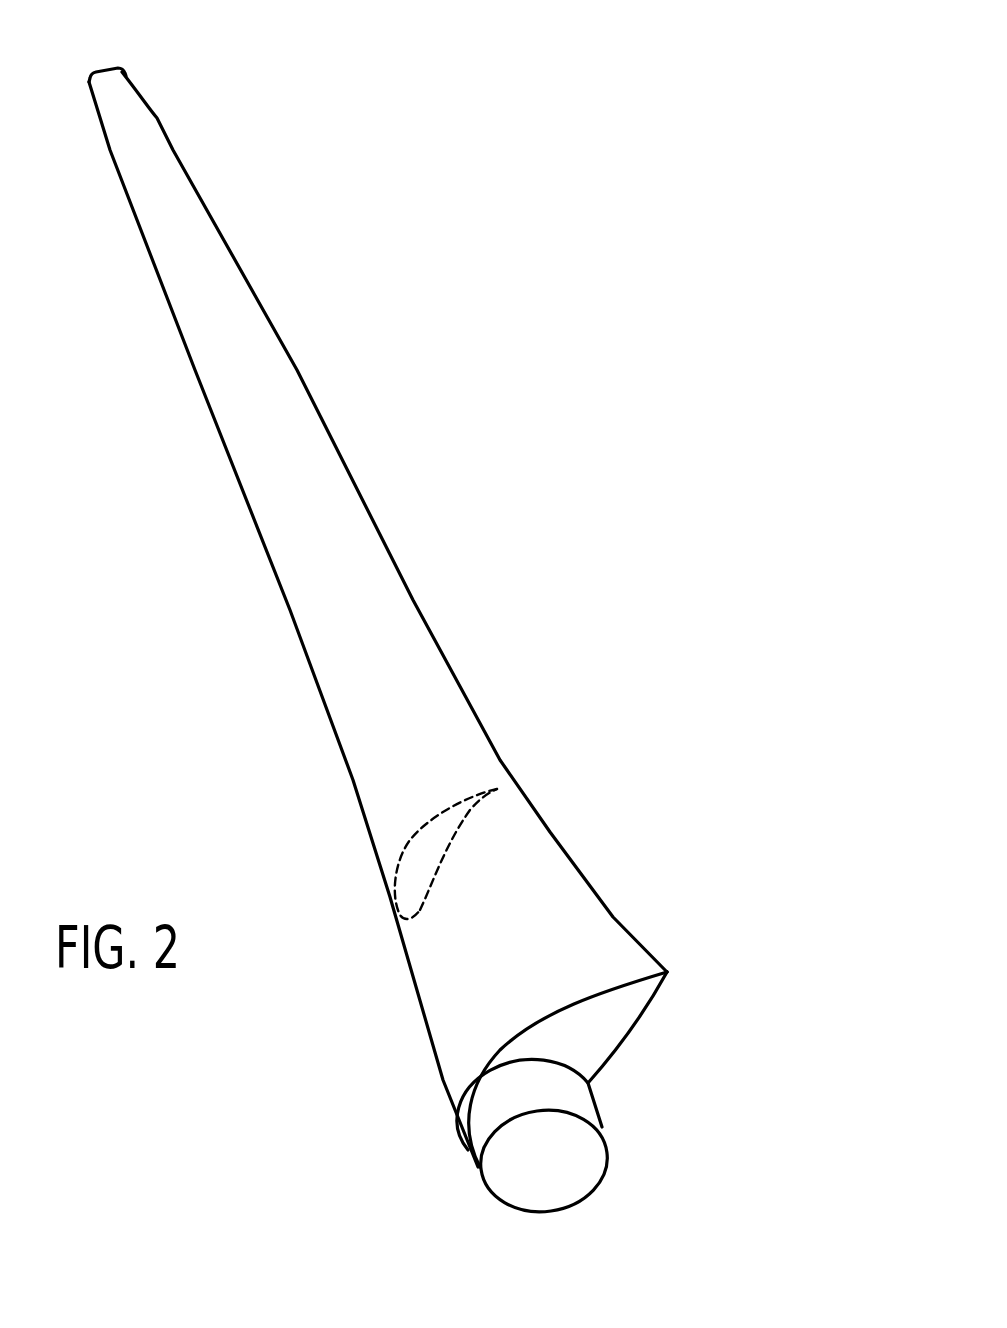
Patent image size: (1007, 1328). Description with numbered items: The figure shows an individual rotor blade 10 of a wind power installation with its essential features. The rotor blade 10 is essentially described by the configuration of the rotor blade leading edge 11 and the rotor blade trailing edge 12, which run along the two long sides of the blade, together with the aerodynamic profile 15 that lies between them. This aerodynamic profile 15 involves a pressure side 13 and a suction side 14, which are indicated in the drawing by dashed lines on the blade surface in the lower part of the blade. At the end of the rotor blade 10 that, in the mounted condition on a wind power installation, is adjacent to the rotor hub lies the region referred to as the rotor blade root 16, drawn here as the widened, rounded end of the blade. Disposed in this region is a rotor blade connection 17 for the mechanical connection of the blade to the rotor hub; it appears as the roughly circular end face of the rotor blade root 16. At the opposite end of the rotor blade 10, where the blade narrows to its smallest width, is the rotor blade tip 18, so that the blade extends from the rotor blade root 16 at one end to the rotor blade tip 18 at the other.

The rotor blade 10 is at (381, 622).
The rotor blade leading edge 11 is at (272, 569).
The rotor blade trailing edge 12 is at (337, 442).
The pressure side 13 is at (430, 890).
The suction side 14 is at (410, 840).
The aerodynamic profile 15 is at (457, 792).
The rotor blade root 16 is at (597, 1023).
The rotor blade connection 17 is at (567, 1182).
The rotor blade tip 18 is at (103, 72).